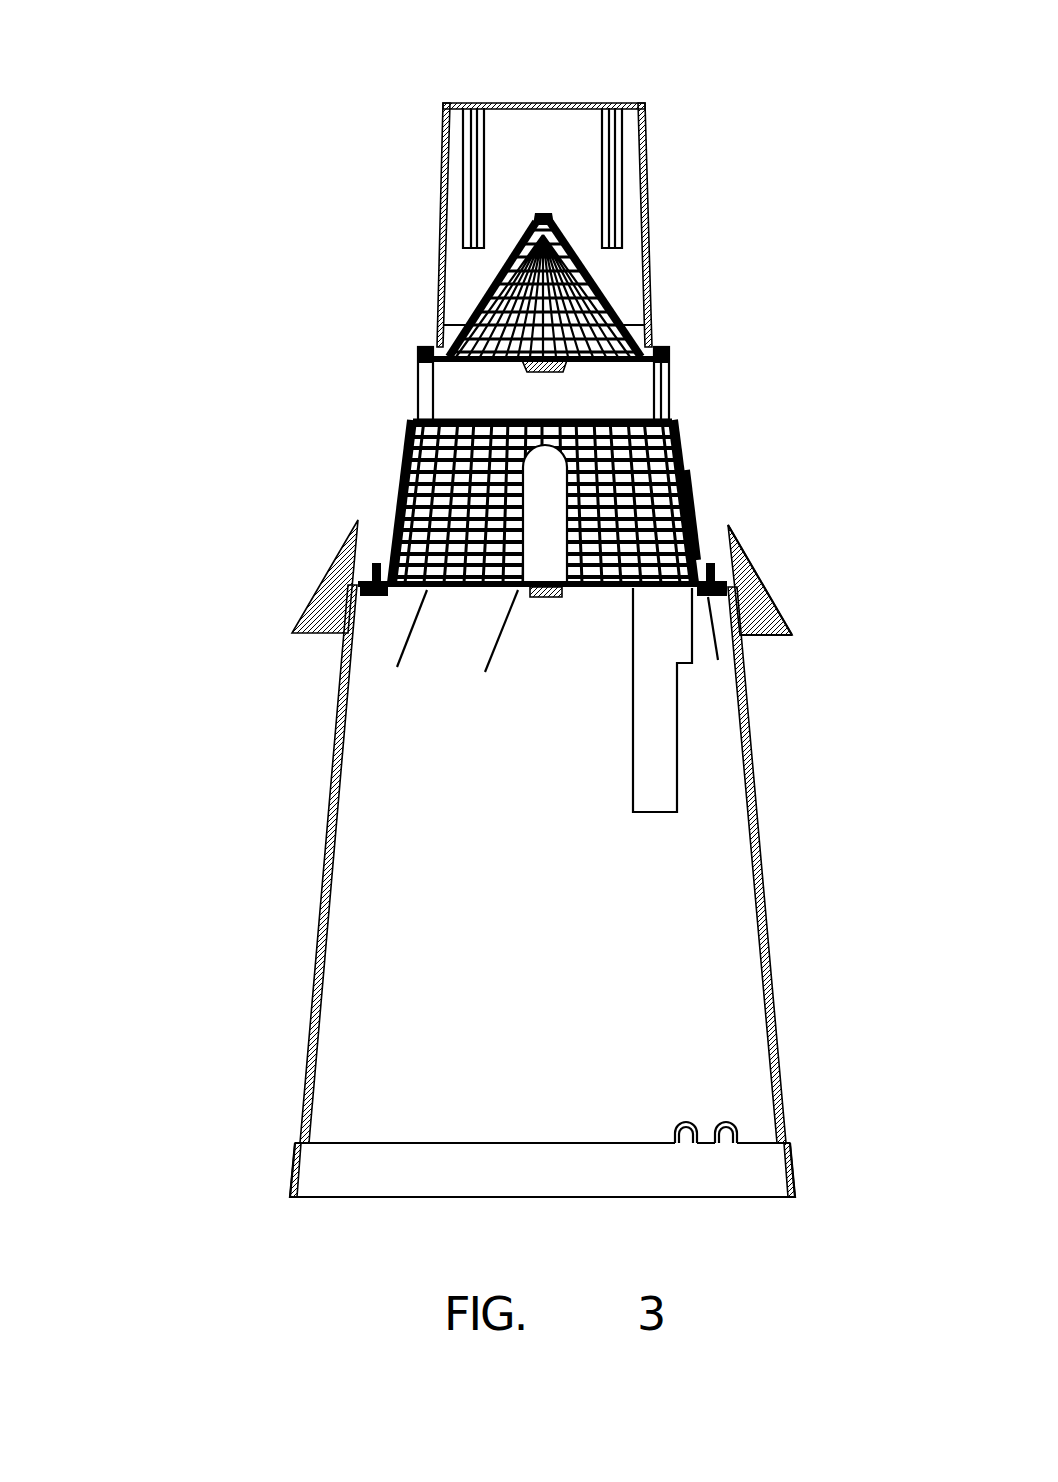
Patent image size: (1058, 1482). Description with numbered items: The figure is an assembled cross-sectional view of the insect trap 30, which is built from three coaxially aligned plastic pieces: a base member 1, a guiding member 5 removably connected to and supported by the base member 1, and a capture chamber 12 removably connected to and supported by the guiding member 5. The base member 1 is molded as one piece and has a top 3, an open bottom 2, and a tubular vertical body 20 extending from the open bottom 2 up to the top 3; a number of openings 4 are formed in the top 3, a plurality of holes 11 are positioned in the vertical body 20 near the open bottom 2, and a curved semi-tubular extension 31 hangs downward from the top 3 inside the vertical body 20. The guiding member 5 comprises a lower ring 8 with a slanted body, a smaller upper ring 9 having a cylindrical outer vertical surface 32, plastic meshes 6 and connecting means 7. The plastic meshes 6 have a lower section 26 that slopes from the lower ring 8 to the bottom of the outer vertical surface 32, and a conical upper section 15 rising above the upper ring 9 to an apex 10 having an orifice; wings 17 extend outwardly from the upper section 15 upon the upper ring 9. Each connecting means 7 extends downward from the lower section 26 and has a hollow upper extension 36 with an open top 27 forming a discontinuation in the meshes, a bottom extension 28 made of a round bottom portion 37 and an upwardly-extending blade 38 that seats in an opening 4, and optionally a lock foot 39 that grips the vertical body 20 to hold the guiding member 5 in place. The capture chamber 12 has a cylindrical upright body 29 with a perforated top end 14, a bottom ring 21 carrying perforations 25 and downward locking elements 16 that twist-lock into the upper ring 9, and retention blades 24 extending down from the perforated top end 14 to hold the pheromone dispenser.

The base member 1 is at (234, 913).
The open bottom 2 is at (413, 1197).
The top 3 is at (397, 667).
The openings 4 is at (485, 672).
The guiding member 5 is at (803, 457).
The plastic meshes 6 is at (518, 310).
The connecting means 7 is at (688, 503).
The lower ring 8 is at (305, 608).
The upper ring 9 is at (420, 393).
The apex 10 is at (543, 212).
The holes 11 is at (727, 1133).
The capture chamber 12 is at (419, 86).
The perforated top end 14 is at (568, 103).
The upper section 15 is at (573, 268).
The locking elements 16 is at (550, 363).
The wings 17 is at (652, 318).
The tubular vertical body 20 is at (768, 968).
The bottom ring 21 is at (662, 345).
The retention blades 24 is at (463, 197).
The perforations 25 is at (420, 349).
The lower section 26 is at (413, 445).
The open top 27 is at (687, 443).
The bottom extension 28 is at (718, 660).
The cylindrical upright body 29 is at (650, 195).
The insect trap 30 is at (204, 565).
The semi-tubular extension 31 is at (662, 765).
The outer vertical surface 32 is at (667, 393).
The hollow upper extension 36 is at (400, 497).
The round bottom portion 37 is at (773, 603).
The upwardly-extending blade 38 is at (750, 562).
The lock foot 39 is at (740, 634).